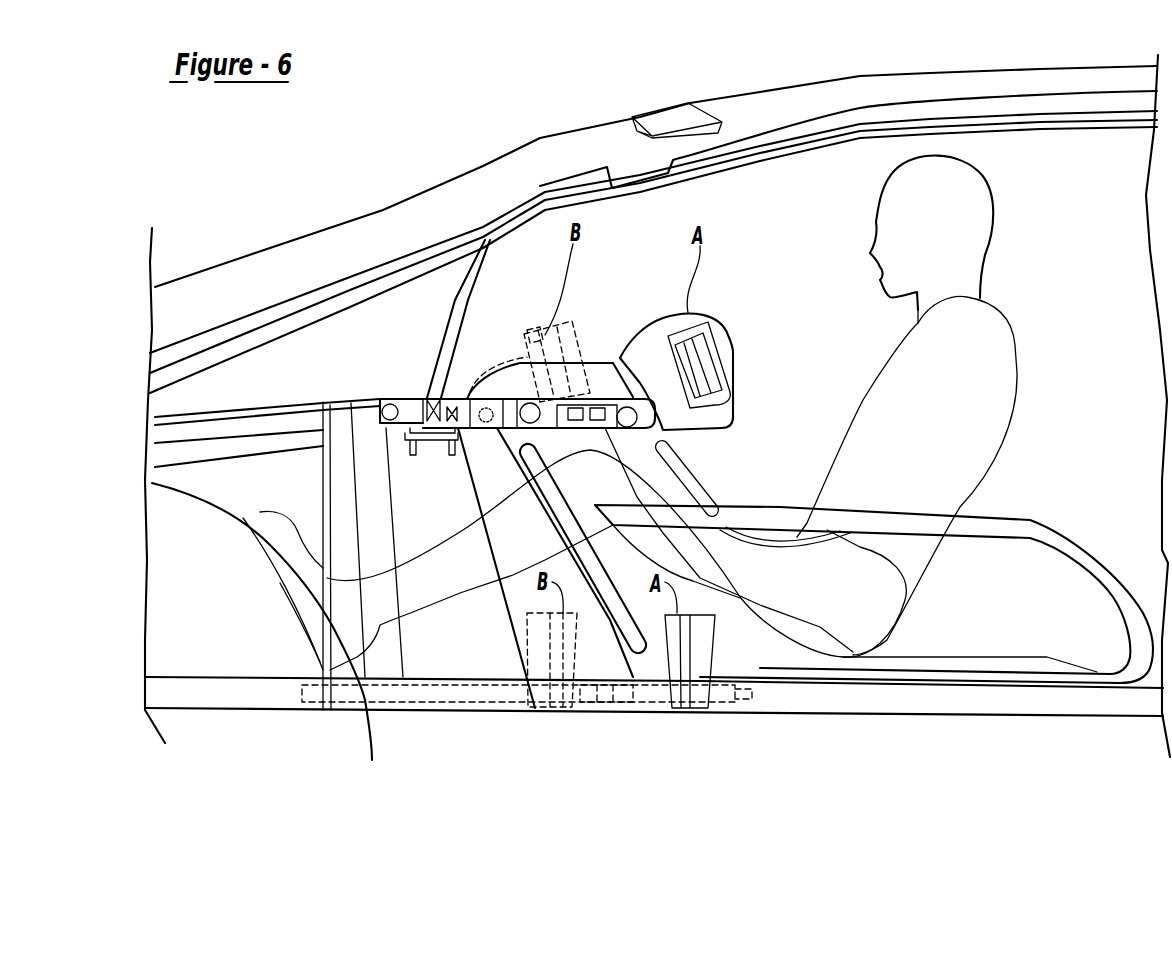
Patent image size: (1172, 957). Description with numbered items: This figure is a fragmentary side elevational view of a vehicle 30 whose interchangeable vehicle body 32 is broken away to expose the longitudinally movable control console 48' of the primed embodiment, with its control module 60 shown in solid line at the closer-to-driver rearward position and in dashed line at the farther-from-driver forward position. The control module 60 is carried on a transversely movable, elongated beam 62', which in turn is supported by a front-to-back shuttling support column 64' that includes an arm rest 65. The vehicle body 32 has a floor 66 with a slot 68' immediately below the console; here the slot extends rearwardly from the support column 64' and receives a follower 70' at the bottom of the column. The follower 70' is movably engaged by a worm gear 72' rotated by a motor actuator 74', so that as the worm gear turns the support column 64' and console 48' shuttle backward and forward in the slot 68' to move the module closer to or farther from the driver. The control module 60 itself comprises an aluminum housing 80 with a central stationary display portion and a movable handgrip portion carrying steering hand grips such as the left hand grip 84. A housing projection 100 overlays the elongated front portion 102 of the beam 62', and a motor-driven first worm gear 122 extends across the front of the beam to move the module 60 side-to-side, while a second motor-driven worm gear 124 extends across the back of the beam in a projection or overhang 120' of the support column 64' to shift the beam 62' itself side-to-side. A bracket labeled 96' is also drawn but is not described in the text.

The vehicle 30 is at (505, 132).
The vehicle body 32 is at (275, 263).
The control console 48' is at (424, 319).
The control module 60 is at (699, 339).
The elongated beam 62' is at (498, 336).
The support column 64' is at (471, 597).
The arm rest 65 is at (790, 515).
The floor 66 is at (282, 675).
The slot 68' is at (513, 660).
The follower 70' is at (588, 702).
The worm gear 72' is at (518, 727).
The motor actuator 74' is at (789, 732).
The housing 80 is at (699, 339).
The left hand grip 84 is at (710, 368).
The mounting bracket 96' is at (627, 724).
The housing projection 100 is at (635, 362).
The elongated front portion 102 is at (657, 427).
The projection or overhang 120' is at (556, 328).
The first worm gear 122 is at (627, 427).
The second worm gear 124 is at (482, 424).